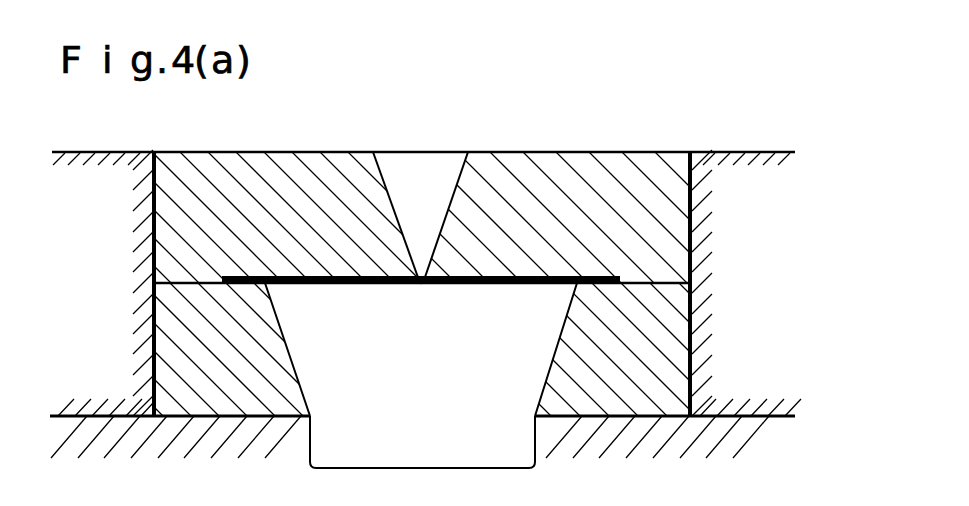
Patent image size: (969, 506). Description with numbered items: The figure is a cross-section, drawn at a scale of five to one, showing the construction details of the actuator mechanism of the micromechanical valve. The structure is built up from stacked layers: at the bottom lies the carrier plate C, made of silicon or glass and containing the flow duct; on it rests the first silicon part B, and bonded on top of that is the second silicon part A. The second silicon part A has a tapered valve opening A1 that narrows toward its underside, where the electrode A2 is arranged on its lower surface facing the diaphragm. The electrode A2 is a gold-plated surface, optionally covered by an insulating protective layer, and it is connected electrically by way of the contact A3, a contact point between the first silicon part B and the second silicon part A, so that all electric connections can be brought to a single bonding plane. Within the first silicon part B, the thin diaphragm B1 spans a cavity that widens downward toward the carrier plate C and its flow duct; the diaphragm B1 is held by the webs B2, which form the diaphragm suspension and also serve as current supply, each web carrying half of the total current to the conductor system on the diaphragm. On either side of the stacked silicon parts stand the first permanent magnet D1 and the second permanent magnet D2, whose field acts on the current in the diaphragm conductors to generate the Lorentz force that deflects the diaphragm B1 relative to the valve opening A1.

The silicon part 2 A is at (525, 213).
The valve opening A1 is at (420, 280).
The electrode A2 is at (463, 282).
The contact A3 is at (603, 282).
The silicon part 1 B is at (649, 382).
The diaphragm B1 is at (407, 288).
The webs B2 is at (302, 288).
The carrier plate with flow duct C is at (697, 458).
The permanent magnet 1 D1 is at (100, 277).
The permanent magnet 2 D2 is at (747, 278).